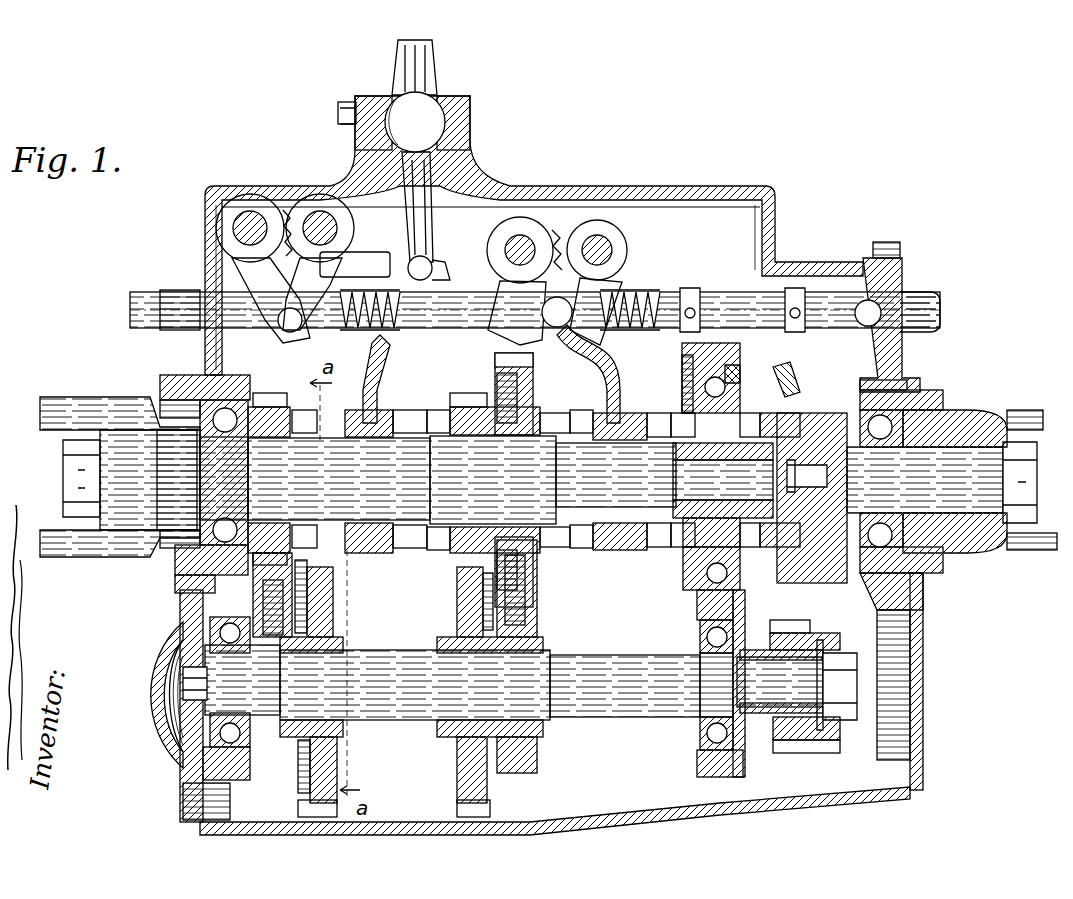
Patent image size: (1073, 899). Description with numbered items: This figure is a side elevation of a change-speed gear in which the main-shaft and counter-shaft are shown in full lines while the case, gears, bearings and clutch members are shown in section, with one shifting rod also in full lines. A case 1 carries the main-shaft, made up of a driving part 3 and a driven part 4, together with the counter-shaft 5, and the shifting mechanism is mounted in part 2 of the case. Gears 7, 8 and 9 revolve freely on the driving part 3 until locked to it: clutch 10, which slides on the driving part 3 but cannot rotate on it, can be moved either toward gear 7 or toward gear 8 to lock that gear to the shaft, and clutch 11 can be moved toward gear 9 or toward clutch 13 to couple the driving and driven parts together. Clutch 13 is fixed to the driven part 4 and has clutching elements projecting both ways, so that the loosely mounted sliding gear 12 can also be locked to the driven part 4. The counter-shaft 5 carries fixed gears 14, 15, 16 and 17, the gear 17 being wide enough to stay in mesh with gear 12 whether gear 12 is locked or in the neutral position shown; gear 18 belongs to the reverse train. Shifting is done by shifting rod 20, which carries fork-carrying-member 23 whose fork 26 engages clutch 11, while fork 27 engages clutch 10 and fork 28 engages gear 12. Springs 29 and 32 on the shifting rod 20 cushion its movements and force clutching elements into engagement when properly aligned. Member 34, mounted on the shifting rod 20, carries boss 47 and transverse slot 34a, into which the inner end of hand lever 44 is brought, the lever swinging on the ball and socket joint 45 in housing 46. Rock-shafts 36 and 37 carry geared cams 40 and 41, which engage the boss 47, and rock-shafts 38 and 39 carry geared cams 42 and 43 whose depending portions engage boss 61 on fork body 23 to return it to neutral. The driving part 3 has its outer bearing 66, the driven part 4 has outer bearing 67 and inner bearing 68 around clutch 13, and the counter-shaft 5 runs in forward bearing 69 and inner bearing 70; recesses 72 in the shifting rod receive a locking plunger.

The case 1 is at (923, 672).
The part of the case 2 is at (205, 236).
The driving part of the main-shaft 3 is at (443, 490).
The driven part of the main-shaft 4 is at (952, 480).
The counter-shaft 5 is at (520, 685).
The gear 7 is at (270, 404).
The gear 8 is at (466, 401).
The gear 9 is at (533, 398).
The clutch 10 is at (383, 470).
The clutch 11 is at (620, 468).
The gear 12 is at (796, 374).
The clutch 13 is at (690, 410).
The gear 14 is at (333, 613).
The gear 15 is at (456, 615).
The gear 16 is at (536, 613).
The gear 17 is at (778, 640).
The gear 18 is at (252, 588).
The shifting rod 20 is at (738, 302).
The fork-carrying-member 23 is at (535, 310).
The fork 26 is at (612, 380).
The fork 27 is at (382, 400).
The fork 28 is at (778, 382).
The spring 29 is at (642, 294).
The spring 32 is at (365, 335).
The member 34 is at (355, 264).
The transverse slot 34a is at (428, 256).
The rock-shaft 36 is at (237, 264).
The rock-shaft 37 is at (333, 246).
The rock-shaft 38 is at (513, 255).
The rock-shaft 39 is at (610, 255).
The cam or lever 40 is at (252, 200).
The cam or lever 41 is at (317, 206).
The cam or lever 42 is at (524, 216).
The cam or lever 43 is at (600, 220).
The hand lever 44 is at (434, 86).
The ball and socket joint 45 is at (415, 122).
The housing 46 is at (470, 148).
The boss 47 is at (292, 333).
The boss 61 is at (557, 312).
The bearing 66 is at (163, 386).
The bearing 67 is at (943, 405).
The bearing 68 is at (740, 376).
The bearing 69 is at (170, 628).
The bearing 70 is at (700, 636).
The recesses 72 is at (917, 300).